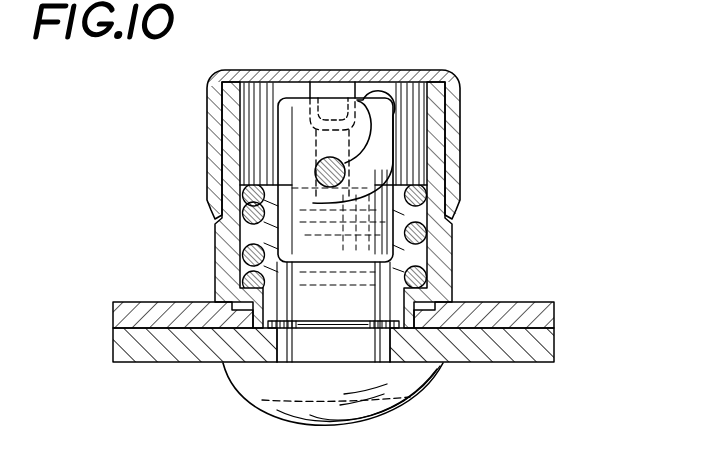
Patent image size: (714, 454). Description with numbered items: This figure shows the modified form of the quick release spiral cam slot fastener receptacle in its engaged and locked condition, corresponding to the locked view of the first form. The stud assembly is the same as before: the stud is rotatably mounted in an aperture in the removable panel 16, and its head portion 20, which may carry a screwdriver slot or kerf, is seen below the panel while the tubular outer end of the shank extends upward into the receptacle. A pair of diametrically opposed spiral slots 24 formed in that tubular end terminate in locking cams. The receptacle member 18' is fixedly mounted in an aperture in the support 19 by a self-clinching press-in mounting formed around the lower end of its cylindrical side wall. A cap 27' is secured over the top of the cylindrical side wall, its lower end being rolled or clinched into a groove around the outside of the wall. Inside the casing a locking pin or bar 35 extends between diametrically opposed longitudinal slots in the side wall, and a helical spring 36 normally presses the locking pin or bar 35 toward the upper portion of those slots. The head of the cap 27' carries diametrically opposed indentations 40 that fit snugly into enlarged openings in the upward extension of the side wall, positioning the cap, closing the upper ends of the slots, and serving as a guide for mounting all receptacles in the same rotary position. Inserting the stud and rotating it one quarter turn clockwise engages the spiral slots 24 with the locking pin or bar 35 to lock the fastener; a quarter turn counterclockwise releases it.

The panel 16 is at (140, 305).
The receptacle member 18' is at (364, 205).
The support 19 is at (512, 356).
The head portion 20 is at (268, 385).
The spiral slots 24 is at (376, 116).
The cap 27' is at (361, 144).
The locking pin or bar 35 is at (333, 230).
The helical spring 36 is at (238, 222).
The indentations 40 is at (323, 92).